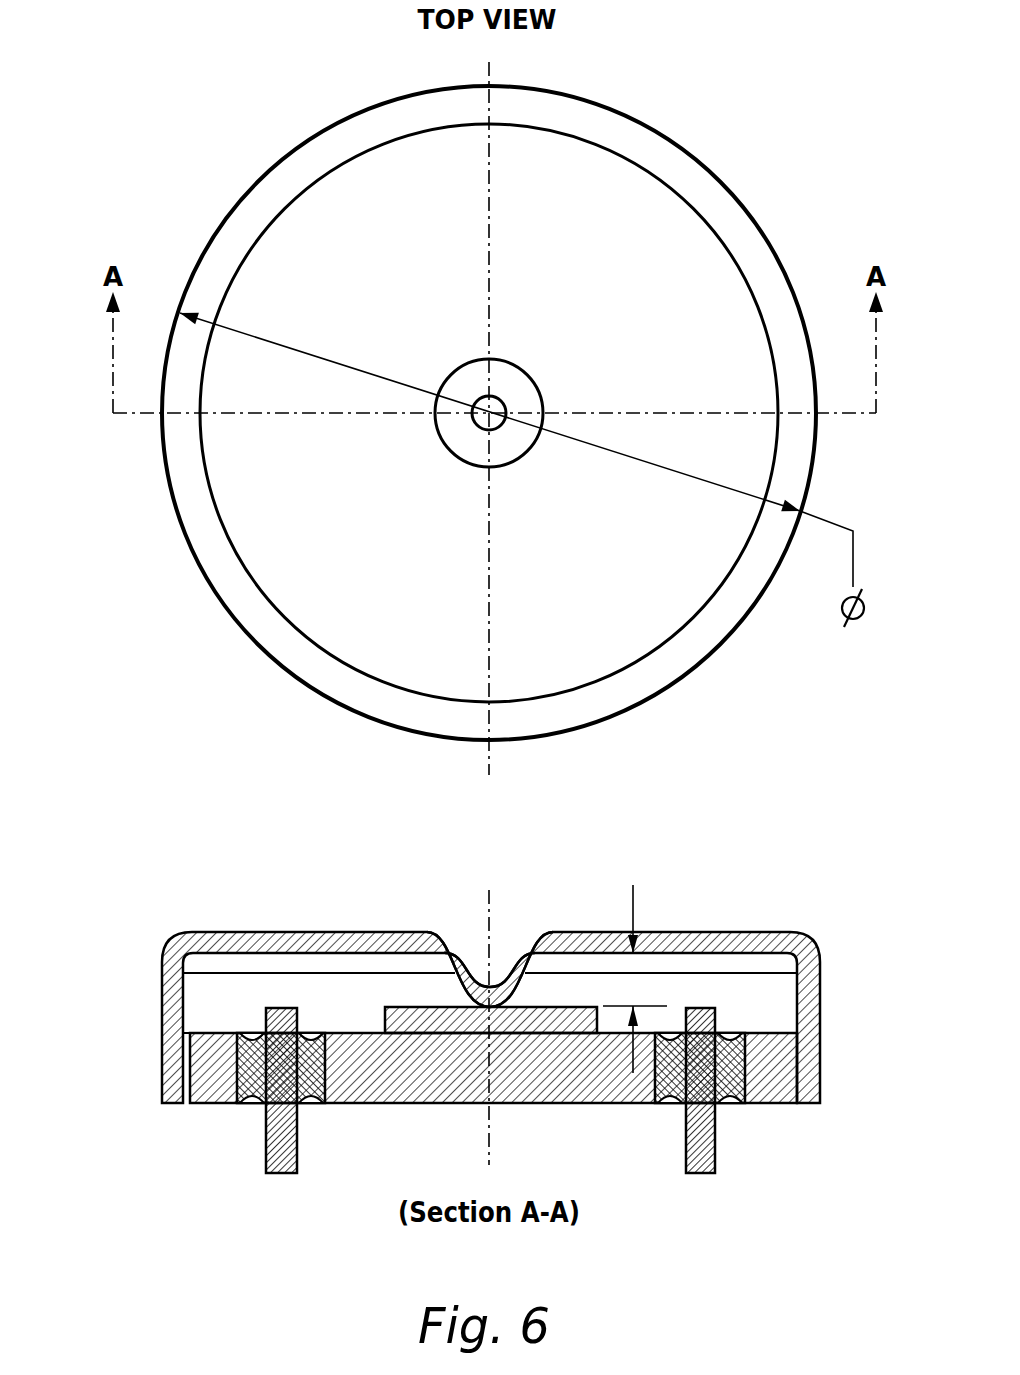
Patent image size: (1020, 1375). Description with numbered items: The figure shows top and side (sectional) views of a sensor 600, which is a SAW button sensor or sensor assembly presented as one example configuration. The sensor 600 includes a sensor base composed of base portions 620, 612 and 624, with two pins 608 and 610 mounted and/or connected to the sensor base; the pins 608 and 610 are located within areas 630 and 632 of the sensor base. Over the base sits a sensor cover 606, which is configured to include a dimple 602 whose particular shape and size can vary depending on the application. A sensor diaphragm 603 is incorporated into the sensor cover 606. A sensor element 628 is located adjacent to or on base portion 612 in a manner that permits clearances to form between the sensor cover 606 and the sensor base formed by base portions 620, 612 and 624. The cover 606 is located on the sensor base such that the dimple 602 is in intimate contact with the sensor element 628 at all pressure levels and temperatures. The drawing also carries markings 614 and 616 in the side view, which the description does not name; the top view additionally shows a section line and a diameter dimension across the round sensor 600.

The sensor 600 is at (135, 152).
The dimple 602 is at (489, 413).
The sensor diaphragm 603 is at (369, 283).
The sensor cover 606 is at (201, 258).
The pin 608 is at (715, 1172).
The pin 610 is at (265, 1170).
The base portion 612 is at (468, 1103).
The cap lower edge 614 is at (180, 1115).
The gap height dimension 616 is at (633, 885).
The base portion 620 is at (783, 1093).
The base portion 624 is at (218, 1103).
The sensor element 628 is at (398, 1007).
The area 630 is at (730, 1103).
The area 632 is at (302, 1103).